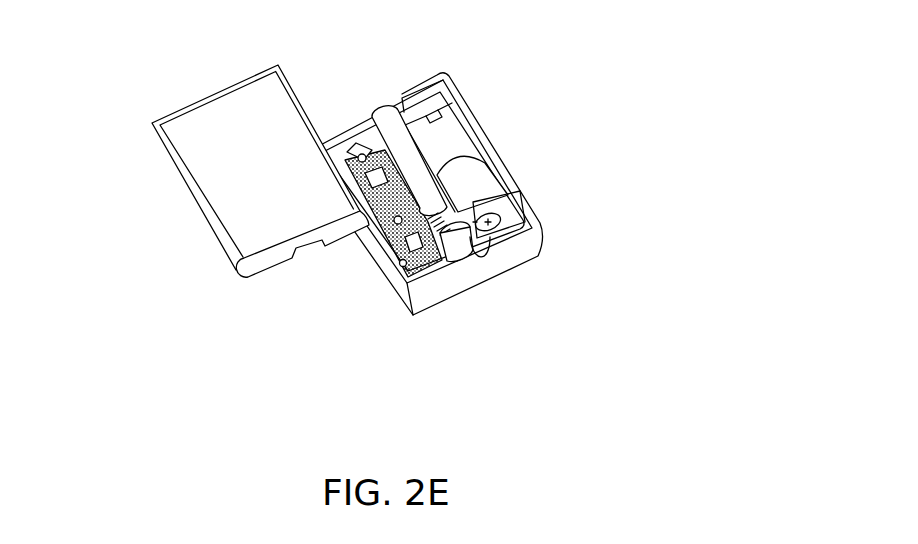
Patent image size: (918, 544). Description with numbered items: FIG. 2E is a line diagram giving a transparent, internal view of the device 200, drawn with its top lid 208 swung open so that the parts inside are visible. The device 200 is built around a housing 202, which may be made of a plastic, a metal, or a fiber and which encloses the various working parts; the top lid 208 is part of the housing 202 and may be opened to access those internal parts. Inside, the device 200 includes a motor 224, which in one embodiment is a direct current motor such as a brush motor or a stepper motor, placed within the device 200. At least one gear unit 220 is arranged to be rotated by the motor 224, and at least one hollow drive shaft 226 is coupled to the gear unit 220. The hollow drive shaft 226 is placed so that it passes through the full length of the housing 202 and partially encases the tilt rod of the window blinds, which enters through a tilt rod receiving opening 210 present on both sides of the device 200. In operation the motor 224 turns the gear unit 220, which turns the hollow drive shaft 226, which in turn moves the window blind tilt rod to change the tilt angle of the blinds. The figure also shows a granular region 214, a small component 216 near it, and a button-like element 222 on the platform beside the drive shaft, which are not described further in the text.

The device 200 is at (382, 192).
The housing 202 is at (454, 220).
The top lid 208 is at (157, 122).
The tilt rod receiving opening 210 is at (474, 262).
The granular material 214 is at (385, 255).
The sensor 216 is at (363, 140).
The gear unit 220 is at (527, 196).
The button 222 is at (500, 224).
The motor 224 is at (490, 168).
The hollow drive shaft 226 is at (432, 152).